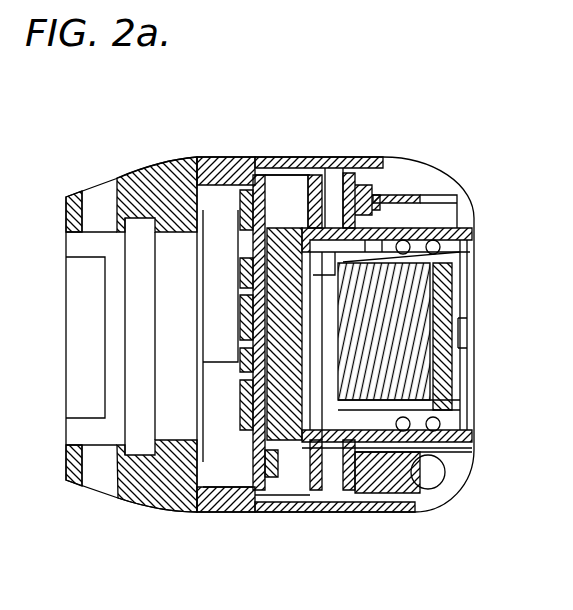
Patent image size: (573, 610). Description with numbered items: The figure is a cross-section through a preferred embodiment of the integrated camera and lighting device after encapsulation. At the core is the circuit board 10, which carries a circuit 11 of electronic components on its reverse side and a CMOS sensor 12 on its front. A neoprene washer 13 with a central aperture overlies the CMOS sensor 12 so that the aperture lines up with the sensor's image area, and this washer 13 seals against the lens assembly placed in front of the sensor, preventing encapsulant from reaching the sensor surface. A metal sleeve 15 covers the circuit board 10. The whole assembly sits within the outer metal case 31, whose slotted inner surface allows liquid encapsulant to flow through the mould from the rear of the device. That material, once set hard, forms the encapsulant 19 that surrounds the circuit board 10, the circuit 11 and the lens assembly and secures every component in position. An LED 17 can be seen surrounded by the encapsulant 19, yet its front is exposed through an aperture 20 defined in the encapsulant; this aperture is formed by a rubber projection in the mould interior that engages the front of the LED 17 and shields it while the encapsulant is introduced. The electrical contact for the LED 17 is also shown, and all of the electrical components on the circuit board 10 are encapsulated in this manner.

The outer metal case 31 is at (135, 173).
The CMOS sensor 12 is at (248, 247).
The neoprene gasket 13 is at (304, 245).
The metal sleeve 15 is at (353, 232).
The circuit 11 is at (253, 430).
The circuit board 10 is at (270, 455).
The aperture 20 is at (348, 488).
The LED 17 is at (395, 487).
The encapsulant 19 is at (420, 498).